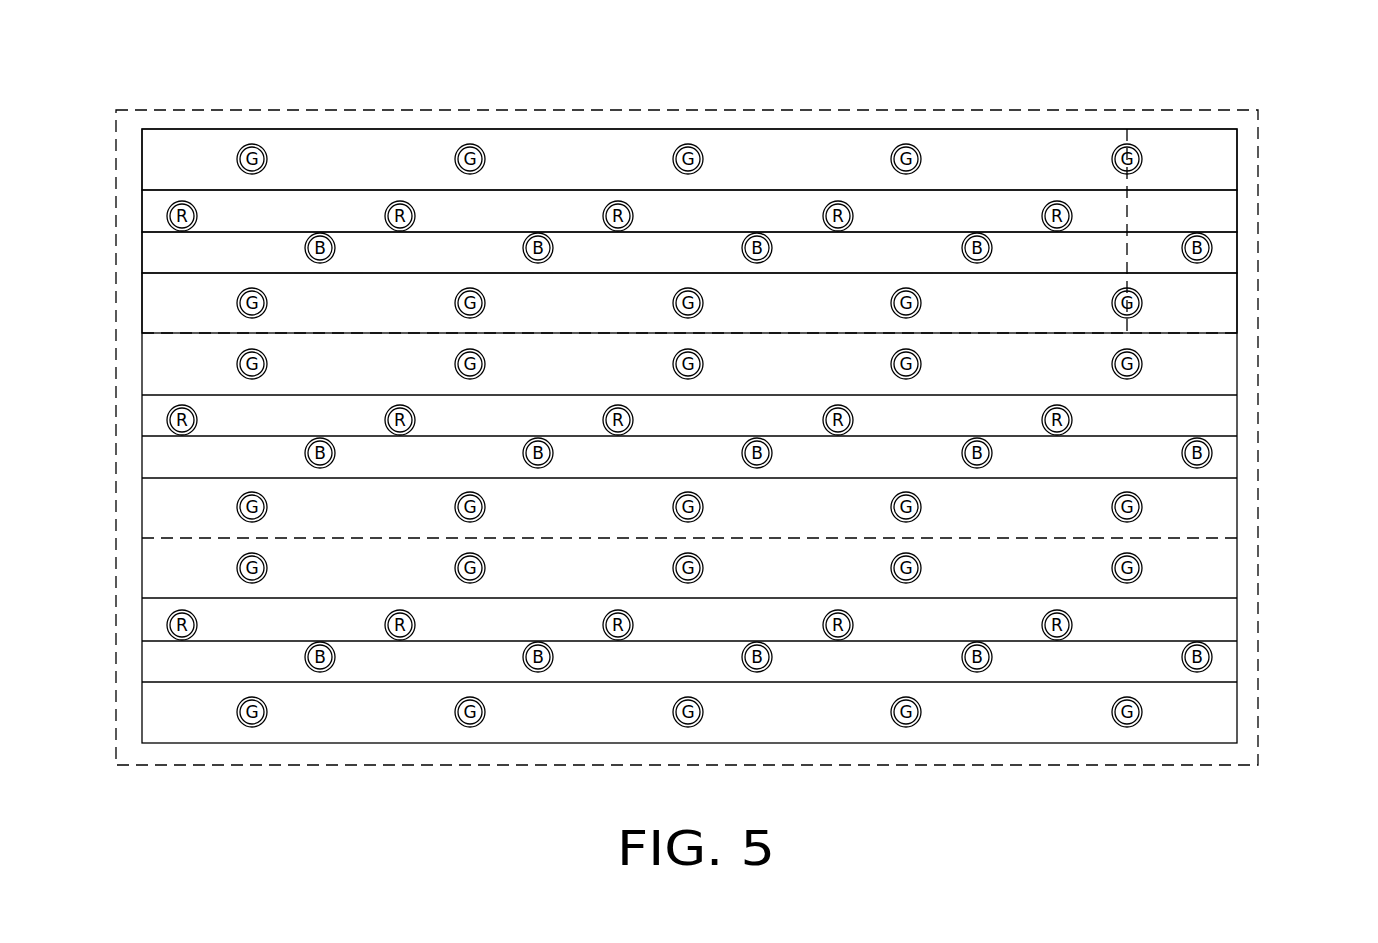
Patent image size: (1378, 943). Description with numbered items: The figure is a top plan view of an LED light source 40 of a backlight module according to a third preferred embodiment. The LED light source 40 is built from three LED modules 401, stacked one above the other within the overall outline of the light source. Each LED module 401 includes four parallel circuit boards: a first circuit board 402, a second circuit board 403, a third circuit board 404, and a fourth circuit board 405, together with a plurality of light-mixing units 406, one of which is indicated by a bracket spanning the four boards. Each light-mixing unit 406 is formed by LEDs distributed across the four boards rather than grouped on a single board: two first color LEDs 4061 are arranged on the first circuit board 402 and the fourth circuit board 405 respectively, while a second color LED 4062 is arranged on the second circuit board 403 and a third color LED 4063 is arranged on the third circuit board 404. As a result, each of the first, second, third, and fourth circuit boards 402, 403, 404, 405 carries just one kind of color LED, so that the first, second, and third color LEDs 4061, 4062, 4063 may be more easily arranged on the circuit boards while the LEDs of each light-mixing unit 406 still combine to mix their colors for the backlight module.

The LED light source 40 is at (692, 394).
The LED module 401 is at (1258, 220).
The first circuit board 402 is at (160, 163).
The second circuit board 403 is at (154, 220).
The third circuit board 404 is at (165, 263).
The fourth circuit board 405 is at (167, 311).
The light-mixing unit 406 is at (1113, 178).
The first color LED 4061 is at (1117, 298).
The second color LED 4062 is at (1050, 204).
The third color LED 4063 is at (1205, 166).